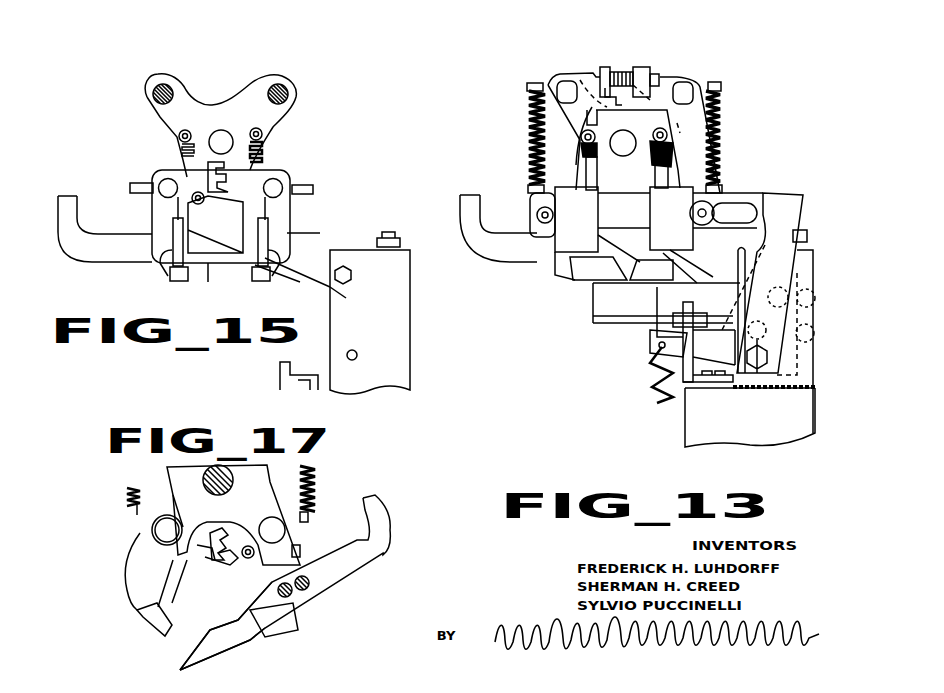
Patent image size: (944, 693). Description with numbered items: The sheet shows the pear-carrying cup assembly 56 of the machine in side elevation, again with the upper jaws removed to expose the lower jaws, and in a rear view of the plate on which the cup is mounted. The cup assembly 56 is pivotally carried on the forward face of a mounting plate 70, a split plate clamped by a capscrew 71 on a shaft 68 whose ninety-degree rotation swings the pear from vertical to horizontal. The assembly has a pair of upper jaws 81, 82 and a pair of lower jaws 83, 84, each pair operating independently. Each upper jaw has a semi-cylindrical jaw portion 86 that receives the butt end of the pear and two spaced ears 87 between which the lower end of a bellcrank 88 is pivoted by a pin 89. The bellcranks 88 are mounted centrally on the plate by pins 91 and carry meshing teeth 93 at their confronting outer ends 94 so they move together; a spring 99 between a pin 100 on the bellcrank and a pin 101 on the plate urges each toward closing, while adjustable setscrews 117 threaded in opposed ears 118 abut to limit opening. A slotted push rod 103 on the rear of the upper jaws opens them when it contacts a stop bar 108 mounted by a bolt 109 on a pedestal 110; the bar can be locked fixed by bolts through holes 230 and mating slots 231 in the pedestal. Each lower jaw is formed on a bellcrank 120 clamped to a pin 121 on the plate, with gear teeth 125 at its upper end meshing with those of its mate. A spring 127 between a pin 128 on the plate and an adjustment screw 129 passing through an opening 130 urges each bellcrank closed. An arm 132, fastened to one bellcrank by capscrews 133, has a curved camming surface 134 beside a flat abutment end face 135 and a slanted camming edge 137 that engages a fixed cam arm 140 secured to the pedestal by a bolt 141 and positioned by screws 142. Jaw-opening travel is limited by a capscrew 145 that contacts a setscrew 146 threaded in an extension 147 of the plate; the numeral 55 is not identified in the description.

In FIG. 15, the hammer assembly 55 is at (303, 82).
In FIG. 17, the hammer assembly 55 is at (108, 520).
In FIG. 13, the hammer assembly 55 is at (686, 63).
In FIG. 15, the cup assembly 56 is at (290, 175).
In FIG. 17, the cup assembly 56 is at (184, 482).
In FIG. 13, the cup assembly 56 is at (698, 81).
In FIG. 15, the shaft 68 is at (223, 138).
In FIG. 17, the shaft 68 is at (232, 478).
In FIG. 13, the shaft 68 is at (615, 151).
In FIG. 15, the mounting plate 70 is at (190, 103).
In FIG. 17, the mounting plate 70 is at (247, 493).
In FIG. 13, the mounting plate 70 is at (616, 179).
In FIG. 17, the capscrew 71 is at (210, 550).
In FIG. 13, the upper jaw 81 is at (563, 241).
In FIG. 13, the upper jaw 82 is at (660, 243).
In FIG. 15, the lower jaw 83 is at (174, 280).
In FIG. 17, the lower jaw 83 is at (290, 620).
In FIG. 13, the lower jaw 83 is at (583, 278).
In FIG. 15, the lower jaw 84 is at (243, 285).
In FIG. 17, the lower jaw 84 is at (152, 622).
In FIG. 13, the lower jaw 84 is at (645, 279).
In FIG. 13, the jaw portion 86 is at (553, 252).
In FIG. 13, the ears 87 is at (535, 217).
In FIG. 13, the bellcrank 88 is at (529, 125).
In FIG. 13, the pin 89 is at (545, 224).
In FIG. 15, the pin 91 is at (155, 91).
In FIG. 13, the pin 91 is at (563, 85).
In FIG. 13, the meshing teeth 93 is at (623, 70).
In FIG. 13, the outer end 94 is at (602, 120).
In FIG. 17, the spring 99 is at (127, 492).
In FIG. 13, the spring 99 is at (530, 138).
In FIG. 13, the pin 100 is at (527, 87).
In FIG. 15, the pin 101 is at (130, 188).
In FIG. 17, the pin 101 is at (152, 525).
In FIG. 13, the pin 101 is at (528, 188).
In FIG. 13, the push rod 103 is at (787, 200).
In FIG. 13, the stop bar 108 is at (768, 217).
In FIG. 13, the bolt 109 is at (763, 373).
In FIG. 15, the pedestal 110 is at (408, 355).
In FIG. 13, the pedestal 110 is at (798, 384).
In FIG. 13, the setscrews 117 is at (598, 70).
In FIG. 13, the ears 118 is at (607, 67).
In FIG. 15, the bellcrank 120 is at (161, 229).
In FIG. 17, the bellcrank 120 is at (146, 580).
In FIG. 15, the pin 121 is at (165, 186).
In FIG. 17, the pin 121 is at (160, 530).
In FIG. 15, the gear teeth 125 is at (218, 186).
In FIG. 17, the gear teeth 125 is at (221, 567).
In FIG. 15, the spring 127 is at (182, 150).
In FIG. 13, the spring 127 is at (624, 219).
In FIG. 15, the pin 128 is at (179, 134).
In FIG. 13, the pin 128 is at (581, 139).
In FIG. 15, the adjustment screw 129 is at (180, 240).
In FIG. 15, the opening 130 is at (167, 254).
In FIG. 15, the arm 132 is at (98, 253).
In FIG. 17, the arm 132 is at (385, 547).
In FIG. 13, the arm 132 is at (465, 222).
In FIG. 17, the capscrews 133 is at (307, 582).
In FIG. 15, the camming surface 134 is at (60, 243).
In FIG. 17, the camming surface 134 is at (390, 560).
In FIG. 13, the camming surface 134 is at (468, 247).
In FIG. 15, the abutment end face 135 is at (66, 195).
In FIG. 17, the abutment end face 135 is at (385, 494).
In FIG. 13, the abutment end face 135 is at (465, 193).
In FIG. 15, the camming edge 137 is at (312, 287).
In FIG. 17, the camming edge 137 is at (193, 648).
In FIG. 13, the camming edge 137 is at (671, 297).
In FIG. 15, the cam arm 140 is at (354, 298).
In FIG. 13, the cam arm 140 is at (708, 334).
In FIG. 15, the bolt 141 is at (352, 275).
In FIG. 13, the bolt 141 is at (742, 292).
In FIG. 15, the screws 142 is at (400, 236).
In FIG. 15, the capscrew 145 is at (215, 222).
In FIG. 17, the capscrew 145 is at (245, 542).
In FIG. 17, the setscrew 146 is at (260, 567).
In FIG. 17, the extension 147 is at (300, 550).
In FIG. 13, the holes 230 is at (703, 323).
In FIG. 13, the slots 231 is at (797, 292).